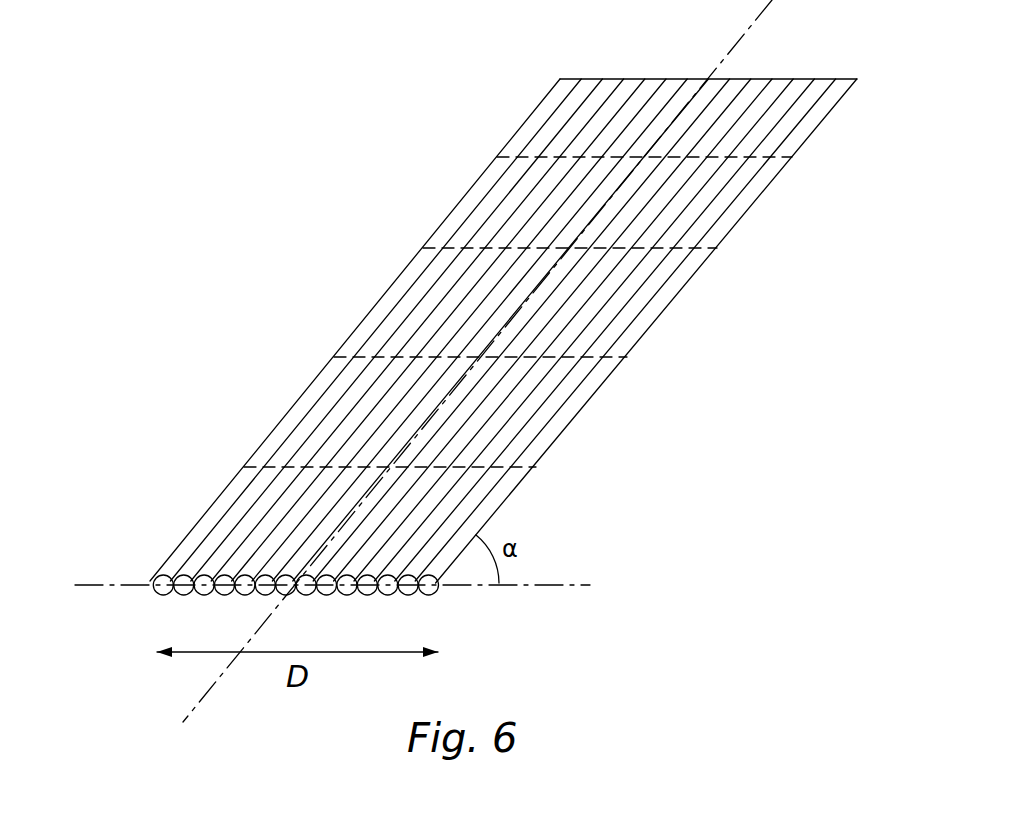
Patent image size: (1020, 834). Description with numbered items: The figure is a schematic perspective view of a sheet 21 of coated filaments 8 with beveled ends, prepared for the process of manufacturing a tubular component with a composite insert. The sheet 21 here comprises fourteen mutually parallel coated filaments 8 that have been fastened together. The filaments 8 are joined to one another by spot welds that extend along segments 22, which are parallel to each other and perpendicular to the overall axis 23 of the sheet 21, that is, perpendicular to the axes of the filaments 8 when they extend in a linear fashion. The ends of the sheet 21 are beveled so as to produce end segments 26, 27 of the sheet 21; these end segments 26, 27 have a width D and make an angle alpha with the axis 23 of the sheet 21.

The coated filaments 8 is at (453, 490).
The sheet 21 is at (443, 203).
The segments 22 is at (673, 157).
The overall axis 23 is at (743, 35).
The end segment 26 is at (199, 601).
The end segment 27 is at (633, 80).